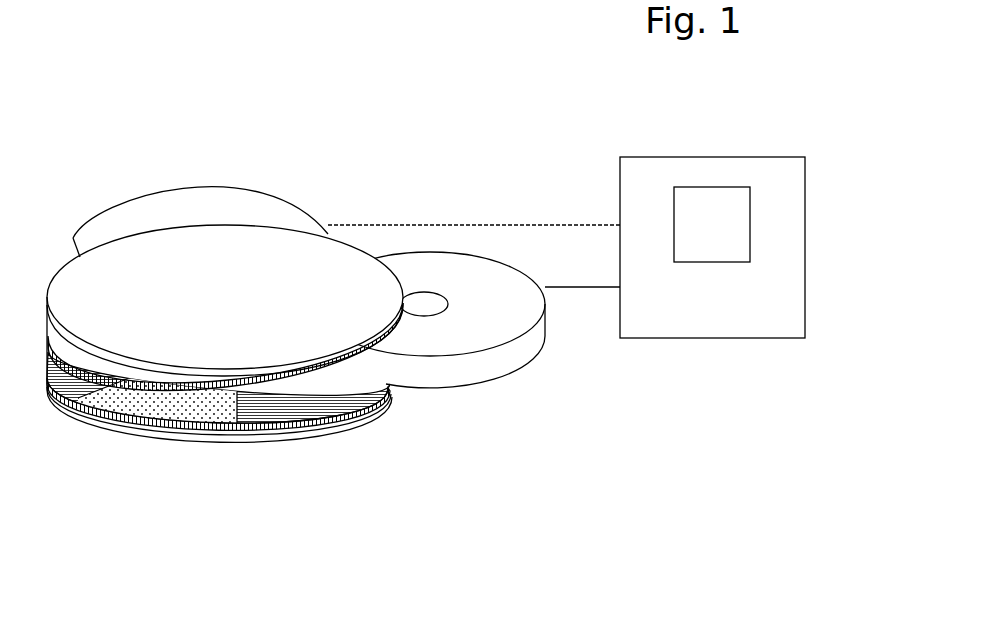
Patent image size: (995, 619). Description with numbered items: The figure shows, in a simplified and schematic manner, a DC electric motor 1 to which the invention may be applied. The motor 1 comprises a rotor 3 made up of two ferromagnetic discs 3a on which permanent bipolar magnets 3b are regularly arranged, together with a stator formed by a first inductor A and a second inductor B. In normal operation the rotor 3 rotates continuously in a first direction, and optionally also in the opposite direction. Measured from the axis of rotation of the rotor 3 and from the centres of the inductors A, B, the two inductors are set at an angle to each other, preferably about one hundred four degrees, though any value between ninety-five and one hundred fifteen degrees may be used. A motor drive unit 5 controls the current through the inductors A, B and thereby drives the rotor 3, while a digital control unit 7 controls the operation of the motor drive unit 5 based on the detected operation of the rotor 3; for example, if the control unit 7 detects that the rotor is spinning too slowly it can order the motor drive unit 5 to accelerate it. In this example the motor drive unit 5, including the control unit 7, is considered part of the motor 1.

The DC electric motor 1 is at (467, 108).
The rotor 3 is at (225, 335).
The ferromagnetic discs 3a is at (233, 228).
The permanent bipolar magnets 3b is at (280, 410).
The motor drive unit 5 is at (806, 268).
The control unit 7 is at (722, 186).
The first inductor A is at (113, 212).
The second inductor B is at (468, 343).